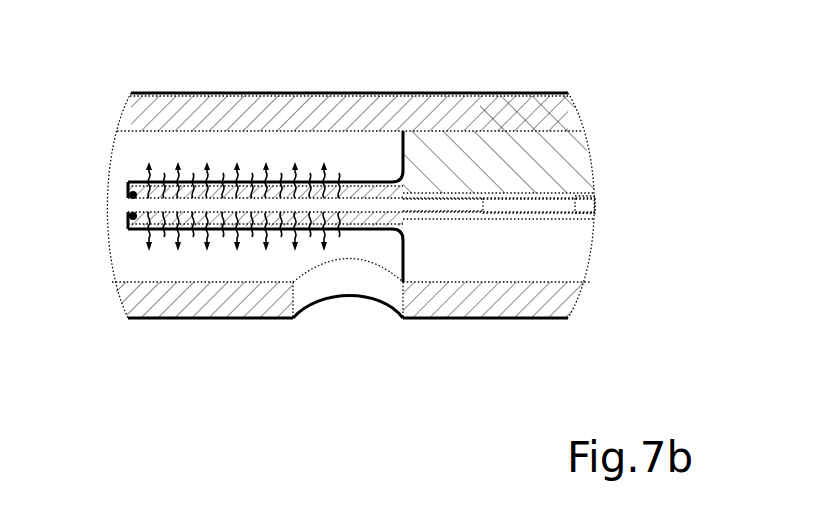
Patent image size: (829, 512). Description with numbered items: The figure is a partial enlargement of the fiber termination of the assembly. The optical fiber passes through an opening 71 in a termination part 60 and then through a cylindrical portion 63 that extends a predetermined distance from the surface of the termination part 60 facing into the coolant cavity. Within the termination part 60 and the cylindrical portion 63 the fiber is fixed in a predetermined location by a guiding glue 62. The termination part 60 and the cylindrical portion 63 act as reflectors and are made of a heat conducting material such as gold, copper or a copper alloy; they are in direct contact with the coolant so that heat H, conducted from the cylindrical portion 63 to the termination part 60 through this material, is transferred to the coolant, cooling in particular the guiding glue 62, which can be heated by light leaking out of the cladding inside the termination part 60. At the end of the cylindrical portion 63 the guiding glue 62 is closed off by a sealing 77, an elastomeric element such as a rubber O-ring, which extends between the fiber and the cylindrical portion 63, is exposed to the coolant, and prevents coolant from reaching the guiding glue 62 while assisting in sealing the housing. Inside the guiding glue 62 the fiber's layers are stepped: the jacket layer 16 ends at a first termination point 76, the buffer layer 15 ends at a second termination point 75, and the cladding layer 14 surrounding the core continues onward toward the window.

The cladding layer 14 is at (356, 210).
The buffer layer 15 is at (540, 207).
The jacket layer 16 is at (583, 208).
The termination part 60 is at (562, 160).
The guiding glue 62 is at (475, 217).
The cylindrical portion 63 is at (183, 215).
The opening 71 is at (606, 190).
The second termination point 75 is at (480, 208).
The first termination point 76 is at (575, 208).
The sealing 77 is at (130, 196).
The heat H is at (262, 172).